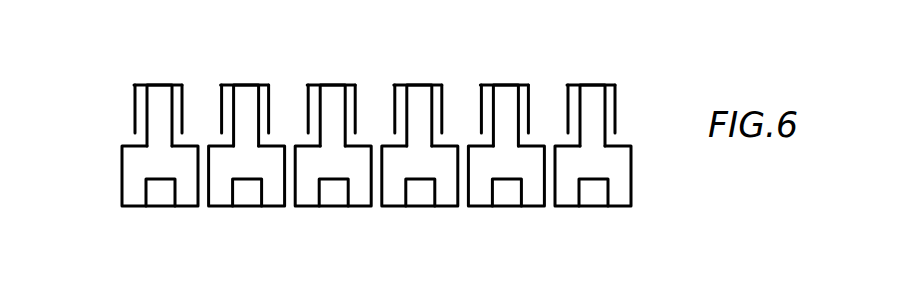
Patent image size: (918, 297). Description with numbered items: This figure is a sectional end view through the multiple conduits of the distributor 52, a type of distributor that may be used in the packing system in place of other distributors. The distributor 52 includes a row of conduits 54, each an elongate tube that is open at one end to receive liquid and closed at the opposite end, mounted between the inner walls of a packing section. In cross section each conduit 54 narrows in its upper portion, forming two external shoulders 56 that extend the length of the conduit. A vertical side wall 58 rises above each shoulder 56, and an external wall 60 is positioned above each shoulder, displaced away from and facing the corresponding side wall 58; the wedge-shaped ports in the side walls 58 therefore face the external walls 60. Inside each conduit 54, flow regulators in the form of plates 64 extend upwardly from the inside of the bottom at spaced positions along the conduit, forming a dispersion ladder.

The distributor 52 is at (88, 208).
The conduit 54 is at (121, 170).
The external shoulder 56 is at (448, 142).
The vertical side wall 58 is at (172, 105).
The external wall 60 is at (133, 102).
The plate 64 is at (502, 221).